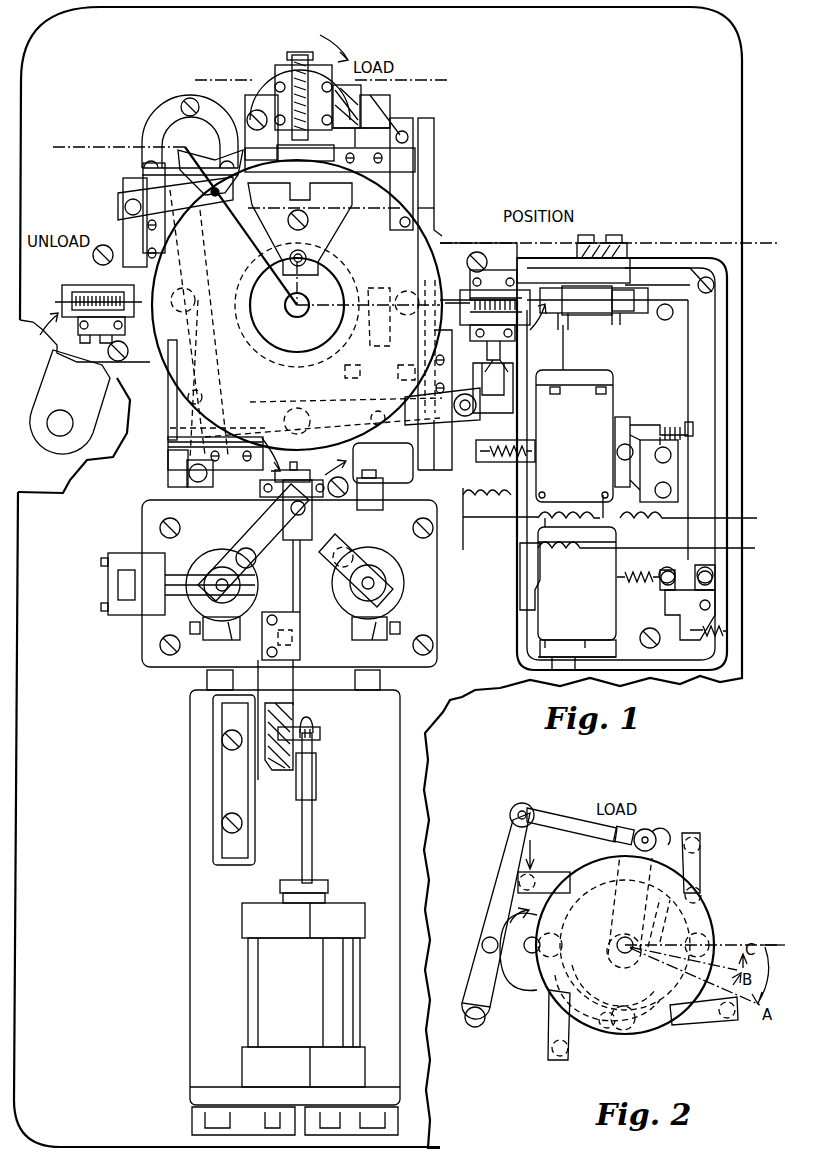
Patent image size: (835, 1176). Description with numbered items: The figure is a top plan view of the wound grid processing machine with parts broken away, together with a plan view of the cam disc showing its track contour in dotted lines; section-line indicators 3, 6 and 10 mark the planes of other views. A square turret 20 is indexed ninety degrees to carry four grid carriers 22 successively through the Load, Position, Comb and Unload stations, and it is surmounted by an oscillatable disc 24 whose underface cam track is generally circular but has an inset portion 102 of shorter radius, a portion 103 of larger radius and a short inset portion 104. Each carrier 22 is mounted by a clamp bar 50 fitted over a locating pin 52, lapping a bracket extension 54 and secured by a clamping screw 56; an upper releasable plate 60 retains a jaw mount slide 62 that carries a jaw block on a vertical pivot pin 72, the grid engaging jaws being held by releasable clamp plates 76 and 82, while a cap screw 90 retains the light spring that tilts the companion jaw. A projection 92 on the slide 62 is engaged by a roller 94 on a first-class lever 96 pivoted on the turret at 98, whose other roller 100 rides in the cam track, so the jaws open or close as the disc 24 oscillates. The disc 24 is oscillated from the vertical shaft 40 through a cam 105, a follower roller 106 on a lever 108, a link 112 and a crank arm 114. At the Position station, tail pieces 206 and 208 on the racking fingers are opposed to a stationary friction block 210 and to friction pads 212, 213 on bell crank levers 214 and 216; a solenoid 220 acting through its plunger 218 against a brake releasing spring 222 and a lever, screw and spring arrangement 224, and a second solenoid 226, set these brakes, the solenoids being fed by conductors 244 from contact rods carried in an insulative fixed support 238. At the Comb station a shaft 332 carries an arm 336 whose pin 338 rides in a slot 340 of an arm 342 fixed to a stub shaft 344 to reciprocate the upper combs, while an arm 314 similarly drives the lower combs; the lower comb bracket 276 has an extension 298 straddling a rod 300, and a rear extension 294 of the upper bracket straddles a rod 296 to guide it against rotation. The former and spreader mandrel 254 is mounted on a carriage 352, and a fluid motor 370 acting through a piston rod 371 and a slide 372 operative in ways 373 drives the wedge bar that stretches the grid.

In FIG. 1, the section line 3- 3 is at (216, 70).
In FIG. 1, the section line 6- 6 is at (67, 133).
In FIG. 1, the tape handling apparatus 10 is at (452, 462).
In FIG. 1, the square turret 20 is at (420, 226).
In FIG. 1, the grid carrier 22 is at (280, 70).
In FIG. 1, the oscillatable plate or disc 24 is at (212, 271).
In FIG. 2, the vertical shaft 40 is at (519, 958).
In FIG. 1, the clamp bar 50 is at (335, 223).
In FIG. 1, the locating pin 52 is at (281, 305).
In FIG. 1, the bracket extension 54 is at (306, 193).
In FIG. 1, the clamping screw 56 is at (290, 215).
In FIG. 1, the upper releasable plate 60 is at (145, 168).
In FIG. 1, the grid jaw mount slide 62 is at (380, 128).
In FIG. 1, the vertical pivot pin 72 is at (350, 112).
In FIG. 1, the releasable clamp plate 76 is at (355, 95).
In FIG. 1, the releasable clamp plate 82 is at (275, 68).
In FIG. 1, the cap screw 90 is at (252, 112).
In FIG. 1, the upwardly extending projection 92 is at (122, 186).
In FIG. 1, the roller 94 is at (400, 80).
In FIG. 2, the roller 94 is at (740, 1017).
In FIG. 1, the lever 96 is at (420, 182).
In FIG. 2, the lever 96 is at (701, 863).
In FIG. 1, the pivot 98 is at (212, 200).
In FIG. 2, the pivot 98 is at (703, 898).
In FIG. 1, the roller 100 is at (125, 203).
In FIG. 2, the roller 100 is at (709, 930).
In FIG. 2, the inset portion 102 is at (640, 905).
In FIG. 2, the portion of larger radius of curvature 103 is at (665, 995).
In FIG. 2, the short inset portion 104 is at (607, 993).
In FIG. 2, the cam 105 is at (518, 993).
In FIG. 2, the follower roller 106 is at (490, 938).
In FIG. 1, the lever 108 is at (53, 448).
In FIG. 2, the lever 108 is at (487, 1030).
In FIG. 2, the link 112 is at (540, 808).
In FIG. 2, the crank arm 114 is at (660, 842).
In FIG. 1, the tail piece 206 is at (590, 318).
In FIG. 1, the tail piece 208 is at (600, 288).
In FIG. 1, the stationary friction block 210 is at (612, 302).
In FIG. 1, the friction pad 212 is at (622, 270).
In FIG. 1, the friction pad 213 is at (614, 325).
In FIG. 1, the bell crank lever 214 is at (722, 305).
In FIG. 1, the bell crank lever 216 is at (650, 410).
In FIG. 1, the plunger 218 is at (520, 608).
In FIG. 1, the solenoid 220 is at (575, 585).
In FIG. 1, the brake releasing spring 222 is at (640, 582).
In FIG. 1, the lever, screw and spring arrangement 224 is at (730, 617).
In FIG. 1, the second solenoid 226 is at (573, 461).
In FIG. 1, the fixed support 238 is at (595, 243).
In FIG. 1, the conductor 244 is at (755, 548).
In FIG. 1, the former and spreader mandrel 254 is at (298, 598).
In FIG. 1, the bracket 276 is at (376, 622).
In FIG. 1, the rear extension 294 is at (125, 553).
In FIG. 1, the rod 296 is at (118, 583).
In FIG. 1, the extension 298 is at (365, 510).
In FIG. 1, the rod 300 is at (385, 490).
In FIG. 1, the arm 314 is at (350, 605).
In FIG. 1, the shaft 332 is at (195, 605).
In FIG. 1, the arm 336 is at (228, 622).
In FIG. 1, the pin 338 is at (243, 550).
In FIG. 1, the slot 340 is at (262, 545).
In FIG. 1, the arm 342 is at (283, 508).
In FIG. 1, the stub shaft 344 is at (310, 545).
In FIG. 1, the carriage 352 is at (190, 921).
In FIG. 1, the fluid motor 370 is at (248, 997).
In FIG. 1, the piston rod 371 is at (312, 828).
In FIG. 1, the slide 372 is at (312, 752).
In FIG. 1, the ways 373 is at (255, 781).